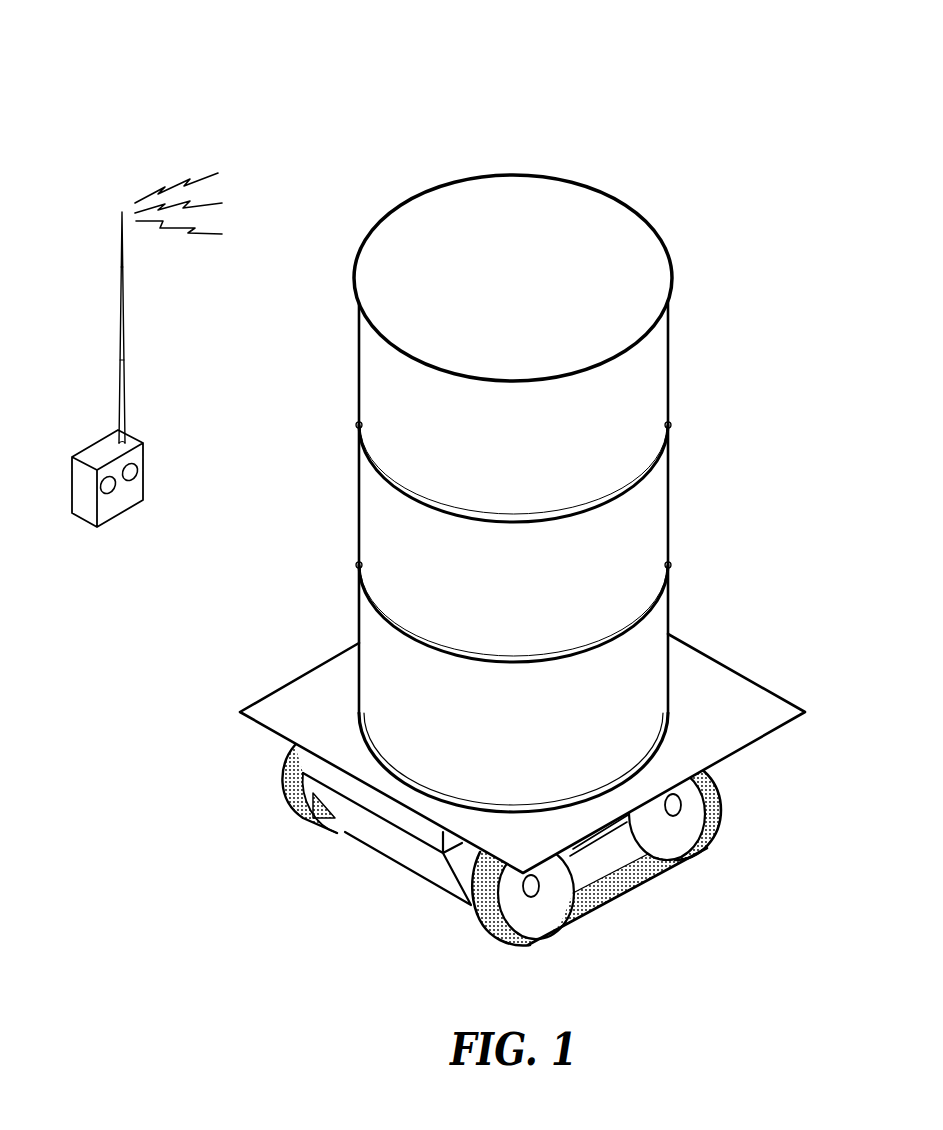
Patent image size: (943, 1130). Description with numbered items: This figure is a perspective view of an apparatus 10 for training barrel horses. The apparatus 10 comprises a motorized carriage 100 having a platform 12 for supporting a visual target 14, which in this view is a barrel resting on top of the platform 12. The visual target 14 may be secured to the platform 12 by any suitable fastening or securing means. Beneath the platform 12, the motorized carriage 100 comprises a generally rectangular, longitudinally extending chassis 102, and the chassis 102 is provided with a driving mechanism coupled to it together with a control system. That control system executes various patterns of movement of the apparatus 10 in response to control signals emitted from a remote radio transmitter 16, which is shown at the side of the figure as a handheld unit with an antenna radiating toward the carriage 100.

The apparatus for training barrel horses 10 is at (780, 94).
The platform 12 is at (267, 697).
The visual target 14 is at (357, 367).
The remote radio transmitter 16 is at (72, 490).
The motorized carriage 100 is at (494, 845).
The chassis 102 is at (437, 886).